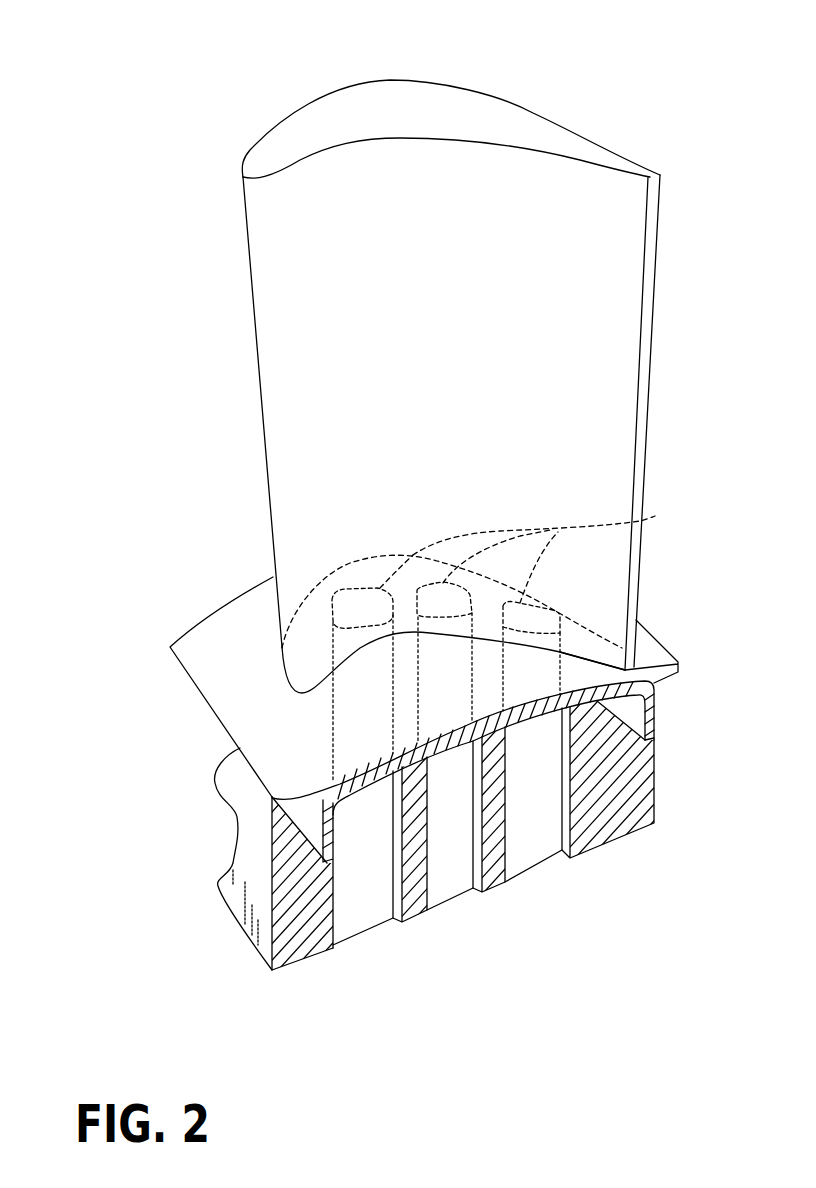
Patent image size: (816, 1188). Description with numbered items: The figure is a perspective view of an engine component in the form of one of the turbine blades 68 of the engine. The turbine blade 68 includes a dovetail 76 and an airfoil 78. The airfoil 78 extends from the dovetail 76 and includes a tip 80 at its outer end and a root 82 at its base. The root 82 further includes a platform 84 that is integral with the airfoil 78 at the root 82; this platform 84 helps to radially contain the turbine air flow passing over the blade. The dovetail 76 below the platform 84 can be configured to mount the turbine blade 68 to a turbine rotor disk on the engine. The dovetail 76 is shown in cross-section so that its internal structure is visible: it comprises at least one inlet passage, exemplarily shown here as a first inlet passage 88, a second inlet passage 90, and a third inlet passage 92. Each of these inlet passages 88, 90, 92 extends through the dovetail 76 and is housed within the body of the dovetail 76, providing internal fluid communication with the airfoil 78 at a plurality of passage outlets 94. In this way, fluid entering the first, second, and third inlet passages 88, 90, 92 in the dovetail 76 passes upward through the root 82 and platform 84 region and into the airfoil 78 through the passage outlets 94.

The turbine blade 68 is at (118, 178).
The dovetail 76 is at (245, 813).
The airfoil 78 is at (256, 462).
The tip 80 is at (335, 118).
The root 82 is at (587, 642).
The platform 84 is at (237, 680).
The first inlet passage 88 is at (375, 954).
The second inlet passage 90 is at (462, 925).
The third inlet passage 92 is at (540, 890).
The passage outlets 94 is at (655, 516).